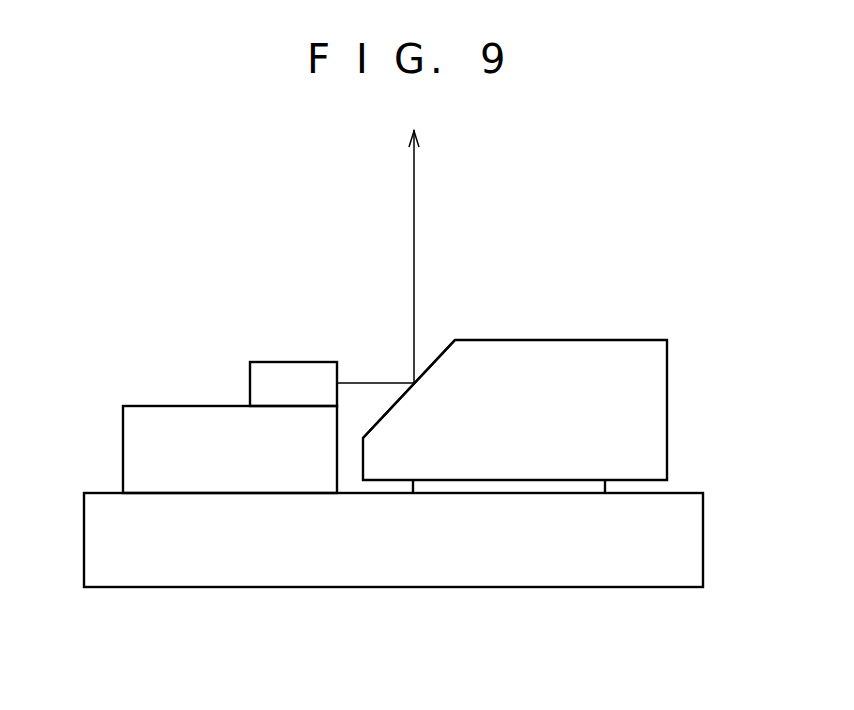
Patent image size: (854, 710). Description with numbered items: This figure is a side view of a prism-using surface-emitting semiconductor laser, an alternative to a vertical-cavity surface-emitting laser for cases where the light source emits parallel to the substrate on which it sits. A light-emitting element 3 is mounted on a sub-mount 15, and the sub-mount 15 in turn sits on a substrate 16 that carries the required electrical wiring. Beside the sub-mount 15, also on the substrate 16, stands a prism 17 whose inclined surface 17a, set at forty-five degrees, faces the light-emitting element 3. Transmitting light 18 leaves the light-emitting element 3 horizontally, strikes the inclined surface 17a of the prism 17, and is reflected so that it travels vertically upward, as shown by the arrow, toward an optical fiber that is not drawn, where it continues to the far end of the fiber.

The light-emitting element 3 is at (296, 361).
The sub-mount 15 is at (188, 405).
The substrate 16 is at (100, 492).
The prism 17 is at (580, 338).
The inclined surface 17a is at (438, 352).
The transmitting light 18 is at (414, 196).